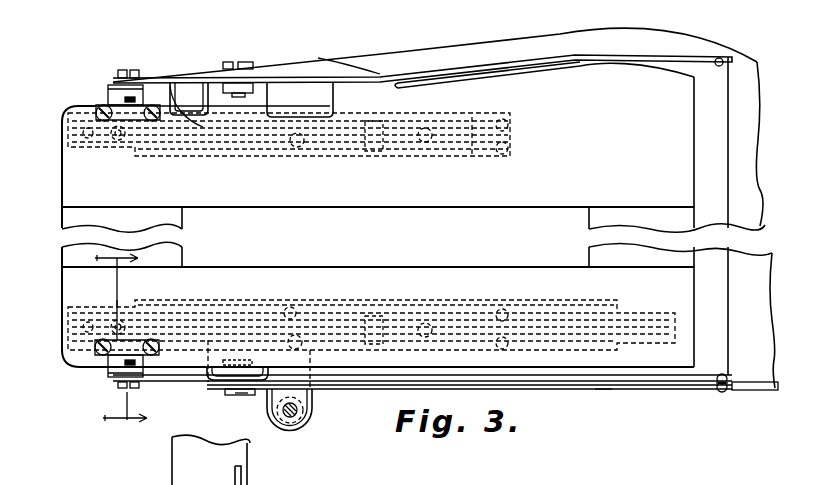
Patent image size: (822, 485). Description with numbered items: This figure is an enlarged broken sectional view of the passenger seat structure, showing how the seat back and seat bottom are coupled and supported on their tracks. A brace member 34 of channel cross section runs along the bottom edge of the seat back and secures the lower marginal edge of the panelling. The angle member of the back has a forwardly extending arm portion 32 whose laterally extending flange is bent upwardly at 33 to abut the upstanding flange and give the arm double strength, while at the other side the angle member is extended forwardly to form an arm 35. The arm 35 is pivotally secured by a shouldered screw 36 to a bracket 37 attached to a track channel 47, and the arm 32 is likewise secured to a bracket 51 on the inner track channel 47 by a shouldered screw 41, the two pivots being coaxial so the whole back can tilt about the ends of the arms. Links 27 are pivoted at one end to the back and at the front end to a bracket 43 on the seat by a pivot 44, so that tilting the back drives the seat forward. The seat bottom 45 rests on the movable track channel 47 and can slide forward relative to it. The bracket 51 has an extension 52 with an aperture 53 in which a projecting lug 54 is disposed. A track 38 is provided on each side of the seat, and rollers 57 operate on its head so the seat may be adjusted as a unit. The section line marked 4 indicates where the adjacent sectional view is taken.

The link 27 is at (461, 66).
The forwardly extending arm portion 32 is at (252, 393).
The upwardly bent flange 33 is at (728, 377).
The brace member 34 is at (722, 80).
The arm 35 is at (404, 56).
The shouldered screw 36 is at (252, 60).
The bracket 37 is at (270, 104).
The track 38 is at (339, 163).
The shouldered screw 41 is at (212, 382).
The bracket 43 is at (100, 101).
The pivot 44 is at (146, 78).
The seat bottom 45 is at (395, 203).
The track channel 47 is at (480, 302).
The bracket 51 is at (265, 402).
The extension 52 is at (312, 397).
The aperture 53 is at (305, 422).
The projecting lug 54 is at (288, 430).
The rollers 57 is at (392, 163).
The section line 4- 4 is at (129, 340).